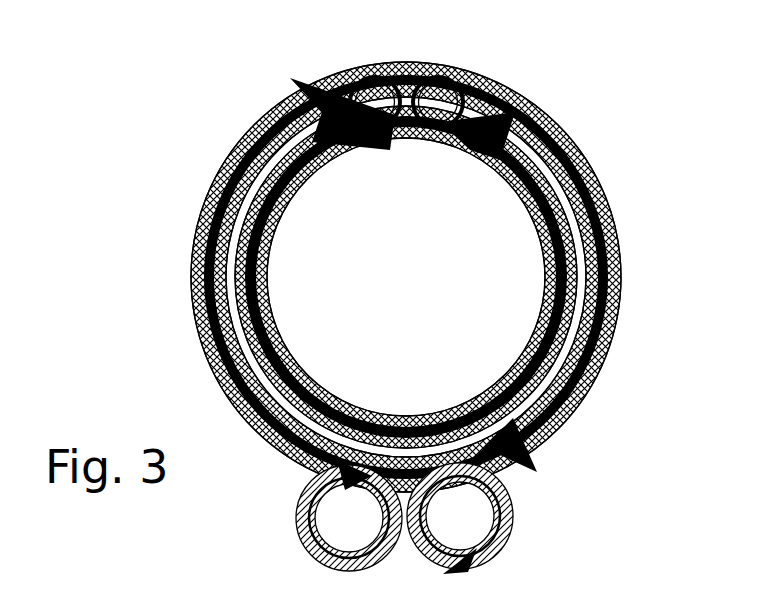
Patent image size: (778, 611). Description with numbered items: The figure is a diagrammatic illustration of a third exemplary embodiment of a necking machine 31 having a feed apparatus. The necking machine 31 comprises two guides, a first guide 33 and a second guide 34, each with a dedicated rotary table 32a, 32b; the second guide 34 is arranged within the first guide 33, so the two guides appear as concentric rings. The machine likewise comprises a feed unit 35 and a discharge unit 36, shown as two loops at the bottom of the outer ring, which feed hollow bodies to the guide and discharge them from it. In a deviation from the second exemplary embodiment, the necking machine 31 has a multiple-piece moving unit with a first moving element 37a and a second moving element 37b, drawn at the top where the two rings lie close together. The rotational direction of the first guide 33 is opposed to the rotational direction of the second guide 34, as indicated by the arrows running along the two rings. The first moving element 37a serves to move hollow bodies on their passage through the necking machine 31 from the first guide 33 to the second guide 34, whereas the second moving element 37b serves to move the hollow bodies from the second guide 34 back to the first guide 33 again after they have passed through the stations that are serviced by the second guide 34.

The necking machine 31 is at (588, 57).
The rotary table 32a is at (573, 143).
The rotary table 32b is at (527, 347).
The first guide 33 is at (608, 233).
The second guide 34 is at (547, 302).
The feed unit 35 is at (295, 492).
The discharge unit 36 is at (512, 492).
The first moving element 37a is at (357, 72).
The second moving element 37b is at (436, 70).